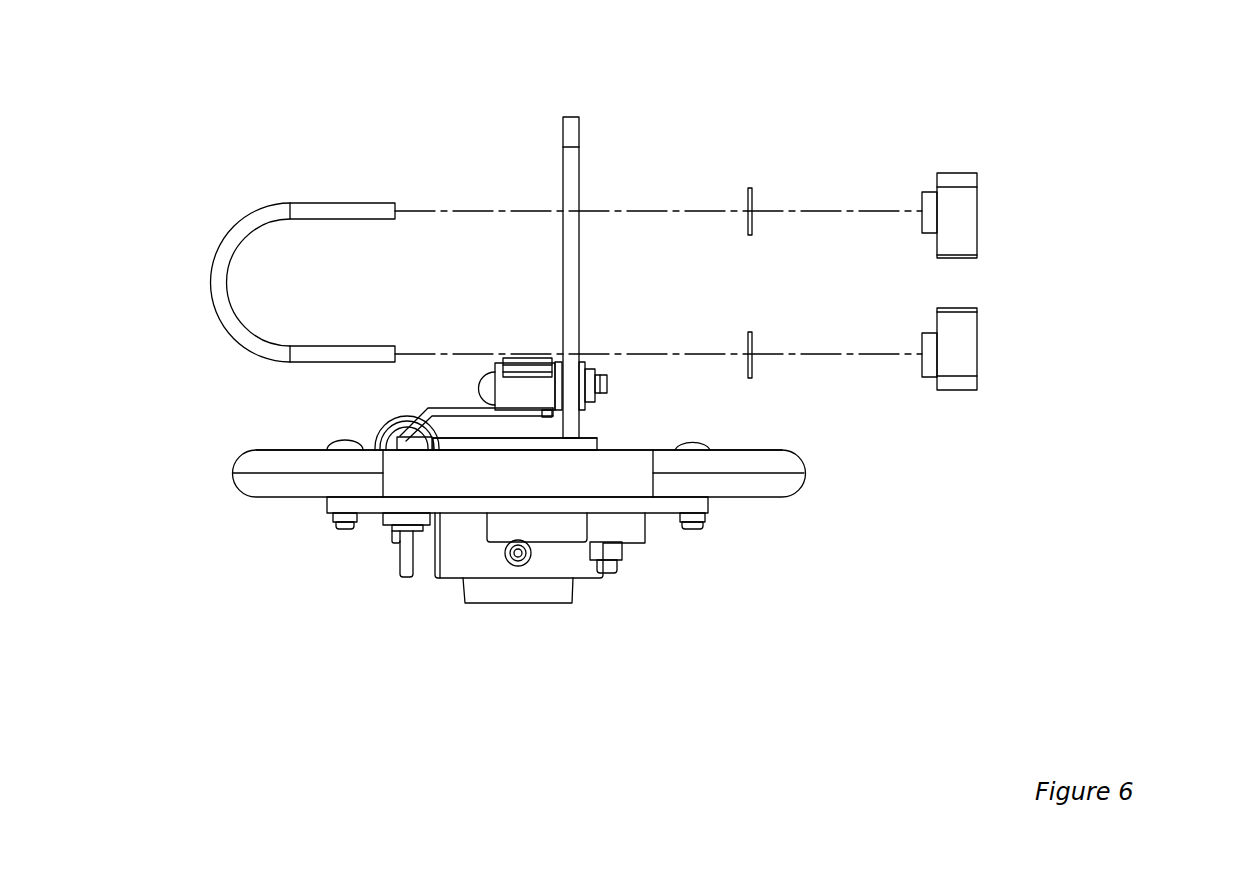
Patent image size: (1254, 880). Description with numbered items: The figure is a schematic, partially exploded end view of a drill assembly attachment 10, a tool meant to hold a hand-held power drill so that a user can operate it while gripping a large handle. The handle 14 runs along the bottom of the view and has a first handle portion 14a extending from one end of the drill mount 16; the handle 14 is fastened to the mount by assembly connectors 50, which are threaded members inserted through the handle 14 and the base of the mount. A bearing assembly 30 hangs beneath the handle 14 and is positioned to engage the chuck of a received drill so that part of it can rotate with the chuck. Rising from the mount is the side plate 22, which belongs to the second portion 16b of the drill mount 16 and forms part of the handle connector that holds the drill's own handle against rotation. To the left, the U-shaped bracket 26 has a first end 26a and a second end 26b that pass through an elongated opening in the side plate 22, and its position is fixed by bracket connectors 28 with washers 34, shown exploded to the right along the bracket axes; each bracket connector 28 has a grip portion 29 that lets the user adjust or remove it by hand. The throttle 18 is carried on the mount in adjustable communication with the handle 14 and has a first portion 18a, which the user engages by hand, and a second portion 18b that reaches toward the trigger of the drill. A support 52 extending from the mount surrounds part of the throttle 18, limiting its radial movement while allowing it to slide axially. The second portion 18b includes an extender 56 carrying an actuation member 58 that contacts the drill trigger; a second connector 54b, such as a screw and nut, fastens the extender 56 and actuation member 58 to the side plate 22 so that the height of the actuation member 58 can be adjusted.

The drill assembly attachment 10 is at (246, 114).
The handle 14 is at (248, 488).
The first handle portion 14a is at (260, 462).
The drill mount 16 is at (503, 153).
The second portion of the drill mount 16b is at (258, 373).
The throttle 18 is at (460, 443).
The first portion of the throttle 18a is at (600, 437).
The second portion of the throttle 18b is at (558, 398).
The side plate 22 is at (572, 124).
The bracket 26 is at (240, 228).
The first end of the bracket 26a is at (397, 206).
The second end of the bracket 26b is at (397, 350).
The bracket connector 28 is at (968, 178).
The grip portion 29 is at (968, 242).
The bearing assembly 30 is at (453, 591).
The washer 34 is at (750, 187).
The assembly connector 50 is at (345, 530).
The support 52 is at (387, 430).
The second connector 54b is at (602, 381).
The extender 56 is at (450, 410).
The actuation member 58 is at (506, 386).